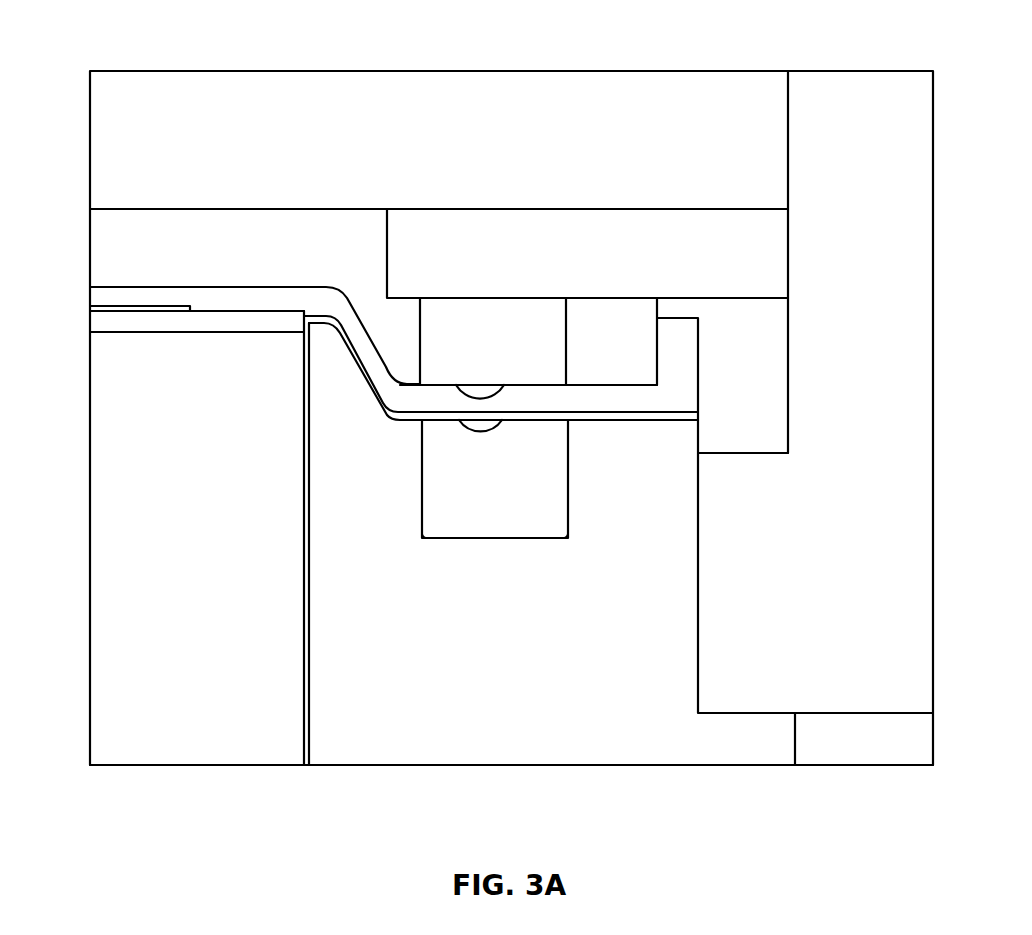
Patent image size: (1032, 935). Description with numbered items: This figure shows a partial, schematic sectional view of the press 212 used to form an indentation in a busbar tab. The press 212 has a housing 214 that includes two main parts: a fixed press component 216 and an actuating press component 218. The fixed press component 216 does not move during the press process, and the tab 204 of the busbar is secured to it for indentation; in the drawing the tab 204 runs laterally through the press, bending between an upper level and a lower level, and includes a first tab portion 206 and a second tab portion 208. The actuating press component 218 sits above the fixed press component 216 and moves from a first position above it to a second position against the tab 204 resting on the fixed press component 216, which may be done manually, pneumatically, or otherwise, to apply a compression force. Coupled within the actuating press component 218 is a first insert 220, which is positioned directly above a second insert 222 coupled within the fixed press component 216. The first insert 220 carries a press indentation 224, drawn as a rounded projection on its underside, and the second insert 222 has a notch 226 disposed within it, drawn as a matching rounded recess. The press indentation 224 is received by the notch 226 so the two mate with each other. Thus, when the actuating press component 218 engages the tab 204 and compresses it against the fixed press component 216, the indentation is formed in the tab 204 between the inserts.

The tab 204 is at (363, 371).
The first tab portion 206 is at (652, 422).
The second tab portion 208 is at (387, 408).
The press 212 is at (805, 52).
The housing 214 is at (568, 62).
The fixed press component 216 is at (367, 745).
The actuating press component 218 is at (357, 225).
The first insert 220 is at (548, 355).
The second insert 222 is at (447, 445).
The press indentation 224 is at (482, 390).
The notch 226 is at (480, 425).